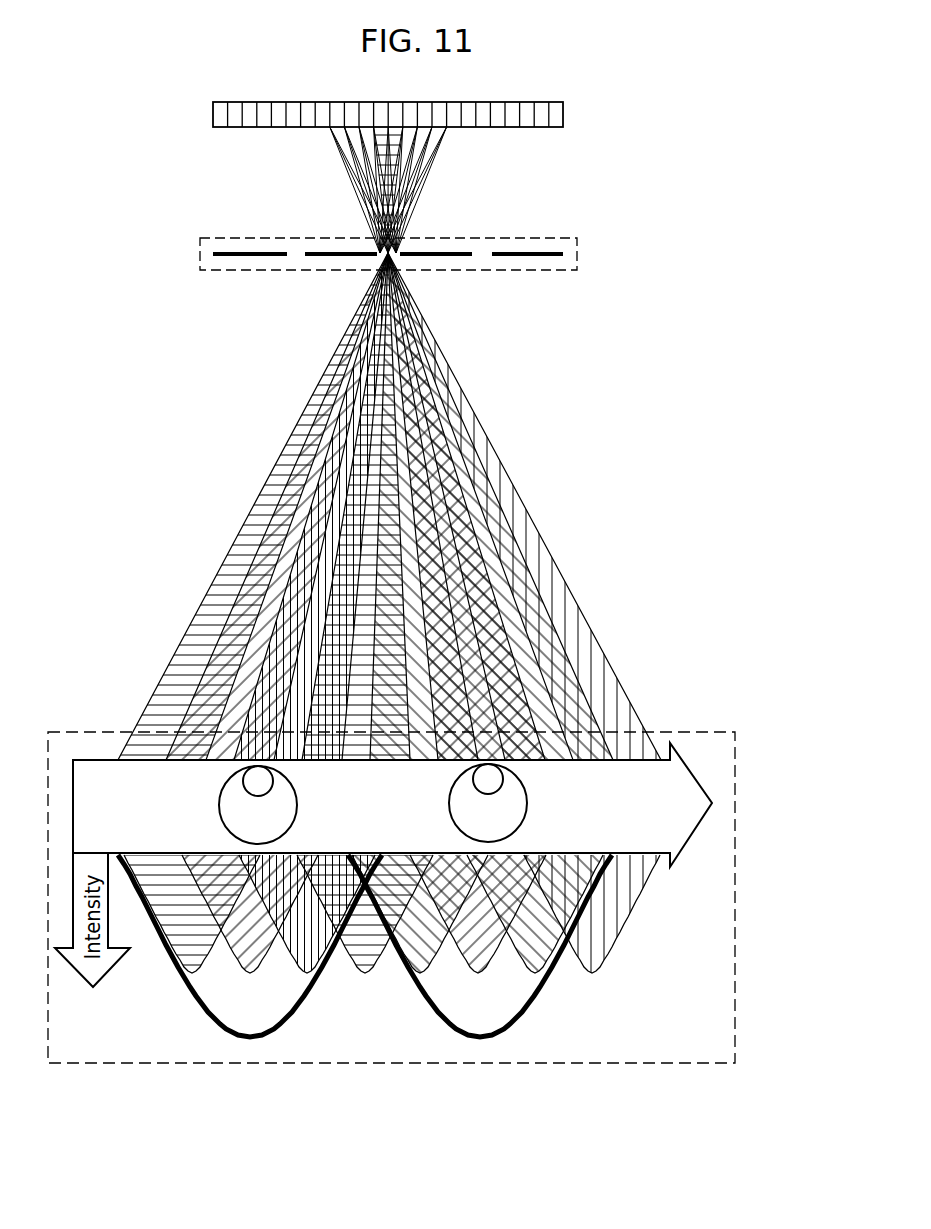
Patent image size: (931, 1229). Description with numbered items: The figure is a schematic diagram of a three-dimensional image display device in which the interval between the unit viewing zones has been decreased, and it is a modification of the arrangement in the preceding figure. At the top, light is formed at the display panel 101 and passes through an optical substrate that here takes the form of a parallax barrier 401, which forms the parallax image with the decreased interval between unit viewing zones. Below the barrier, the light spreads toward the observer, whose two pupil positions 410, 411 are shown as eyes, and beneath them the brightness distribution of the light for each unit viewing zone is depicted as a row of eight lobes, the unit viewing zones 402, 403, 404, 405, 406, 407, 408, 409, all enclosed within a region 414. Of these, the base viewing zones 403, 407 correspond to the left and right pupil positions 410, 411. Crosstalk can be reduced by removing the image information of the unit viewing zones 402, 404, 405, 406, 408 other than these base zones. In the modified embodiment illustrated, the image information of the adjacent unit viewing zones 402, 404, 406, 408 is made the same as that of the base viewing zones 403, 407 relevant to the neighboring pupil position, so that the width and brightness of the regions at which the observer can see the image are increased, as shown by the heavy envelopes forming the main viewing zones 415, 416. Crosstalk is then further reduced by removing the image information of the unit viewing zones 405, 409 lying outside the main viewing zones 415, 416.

The display panel 101 is at (563, 113).
The parallax barrier 401 is at (577, 252).
The unit viewing zone 402 is at (192, 978).
The base viewing zone 403 is at (250, 975).
The unit viewing zone 404 is at (307, 976).
The unit viewing zone 405 is at (365, 975).
The unit viewing zone 406 is at (420, 978).
The base viewing zone 407 is at (478, 975).
The unit viewing zone 408 is at (535, 976).
The unit viewing zone 409 is at (592, 975).
The pupil position 410 is at (219, 802).
The pupil position 411 is at (527, 801).
The viewing zone 414 is at (737, 993).
The main viewing zone 415 is at (250, 1040).
The main viewing zone 416 is at (480, 1040).